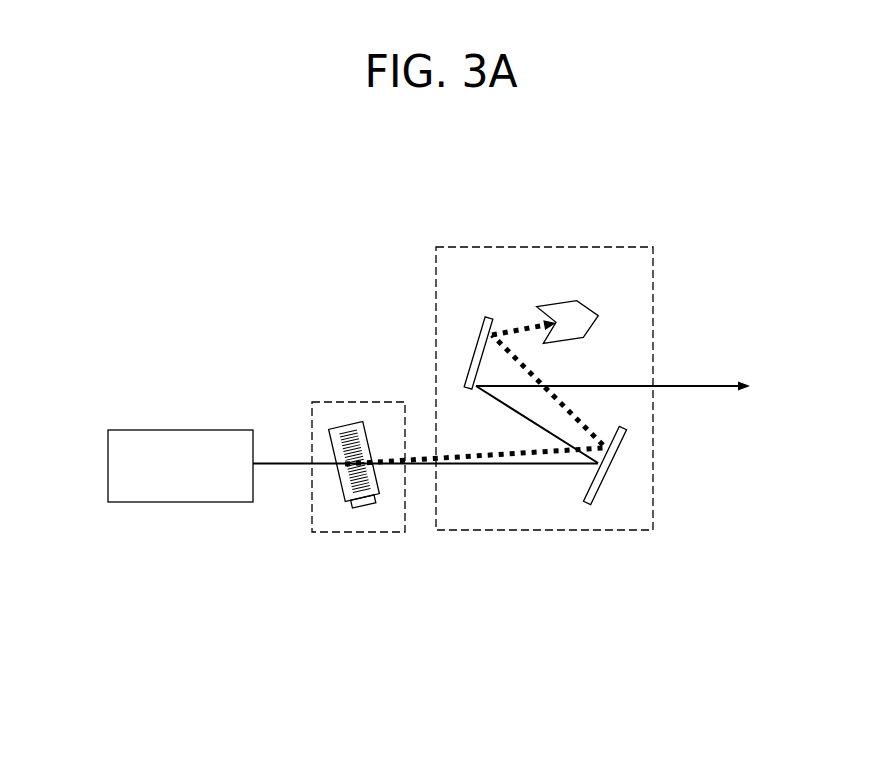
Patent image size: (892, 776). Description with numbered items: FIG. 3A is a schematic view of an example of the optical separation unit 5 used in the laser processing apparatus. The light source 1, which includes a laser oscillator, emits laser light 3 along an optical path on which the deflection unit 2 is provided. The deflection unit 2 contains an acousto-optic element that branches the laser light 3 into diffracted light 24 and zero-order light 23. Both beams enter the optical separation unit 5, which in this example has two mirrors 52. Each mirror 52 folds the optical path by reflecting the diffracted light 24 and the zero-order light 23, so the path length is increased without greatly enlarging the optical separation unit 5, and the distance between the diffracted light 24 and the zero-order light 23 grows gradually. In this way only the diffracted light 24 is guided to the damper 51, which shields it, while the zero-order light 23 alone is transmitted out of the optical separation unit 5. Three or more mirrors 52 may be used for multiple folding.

The light source 1 is at (185, 428).
The deflection unit 2 is at (328, 400).
The laser light 3 is at (282, 467).
The optical separation unit 5 is at (525, 247).
The zero-order light 23 is at (695, 383).
The diffracted light 24 is at (423, 448).
The damper 51 is at (562, 303).
The mirror 52 is at (488, 312).